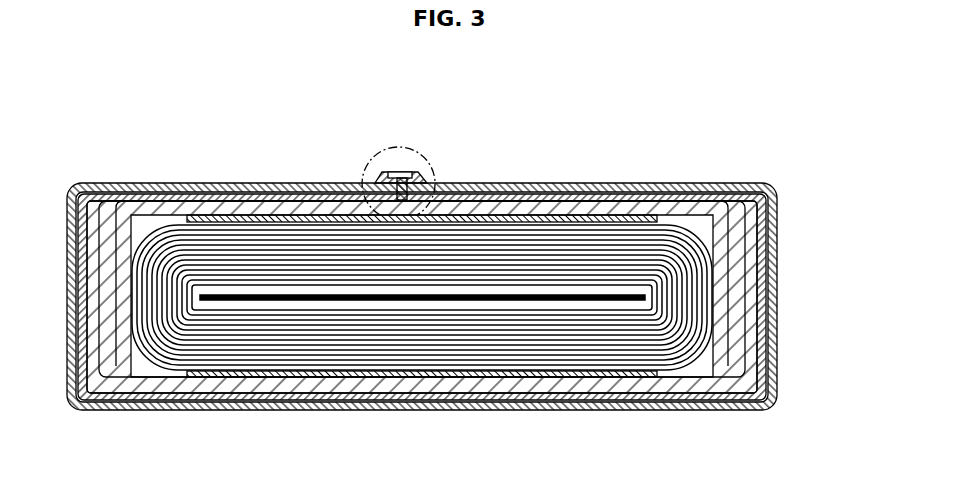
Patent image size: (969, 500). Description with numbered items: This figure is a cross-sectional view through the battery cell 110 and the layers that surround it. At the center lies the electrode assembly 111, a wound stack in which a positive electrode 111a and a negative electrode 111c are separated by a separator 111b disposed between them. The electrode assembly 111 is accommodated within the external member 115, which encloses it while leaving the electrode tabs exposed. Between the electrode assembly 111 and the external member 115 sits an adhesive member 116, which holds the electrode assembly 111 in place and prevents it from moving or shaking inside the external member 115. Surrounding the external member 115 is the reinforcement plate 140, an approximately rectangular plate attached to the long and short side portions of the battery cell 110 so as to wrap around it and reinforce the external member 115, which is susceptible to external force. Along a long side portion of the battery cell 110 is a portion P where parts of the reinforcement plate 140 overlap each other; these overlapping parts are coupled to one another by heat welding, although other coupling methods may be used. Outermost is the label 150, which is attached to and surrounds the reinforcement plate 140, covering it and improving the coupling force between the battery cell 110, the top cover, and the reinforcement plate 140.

The battery cell 110 is at (85, 109).
The electrode assembly 111 is at (424, 343).
The positive electrode 111a is at (583, 366).
The separator 111b is at (495, 361).
The negative electrode 111c is at (421, 356).
The external member 115 is at (736, 267).
The adhesive member 116 is at (256, 218).
The reinforcement plate 140 is at (762, 313).
The label 150 is at (775, 350).
The portion where portions of the reinforcement plate overlap P is at (417, 148).